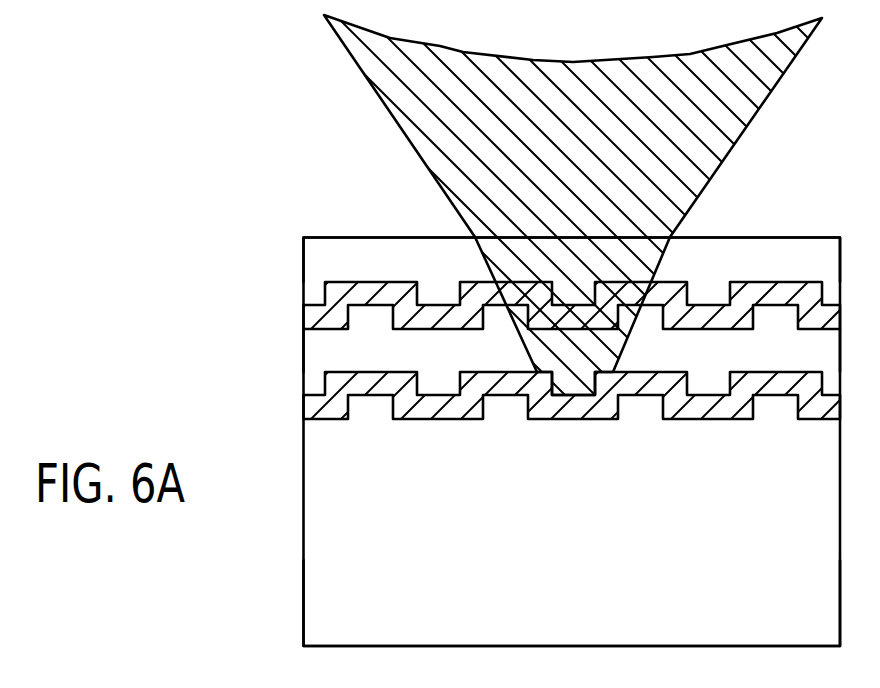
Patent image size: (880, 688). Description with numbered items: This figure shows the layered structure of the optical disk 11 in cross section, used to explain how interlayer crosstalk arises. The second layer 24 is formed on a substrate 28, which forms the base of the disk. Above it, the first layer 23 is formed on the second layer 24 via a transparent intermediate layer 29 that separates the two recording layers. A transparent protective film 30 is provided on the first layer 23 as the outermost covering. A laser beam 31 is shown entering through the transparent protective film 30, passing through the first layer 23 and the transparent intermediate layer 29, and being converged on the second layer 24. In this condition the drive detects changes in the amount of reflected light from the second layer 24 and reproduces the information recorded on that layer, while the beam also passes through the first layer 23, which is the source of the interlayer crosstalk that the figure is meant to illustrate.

The optical disk 11 is at (290, 538).
The first layer 23 is at (313, 318).
The second layer 24 is at (313, 406).
The substrate 28 is at (313, 607).
The transparent intermediate layer 29 is at (313, 357).
The transparent protective film 30 is at (313, 256).
The laser beam 31 is at (417, 151).